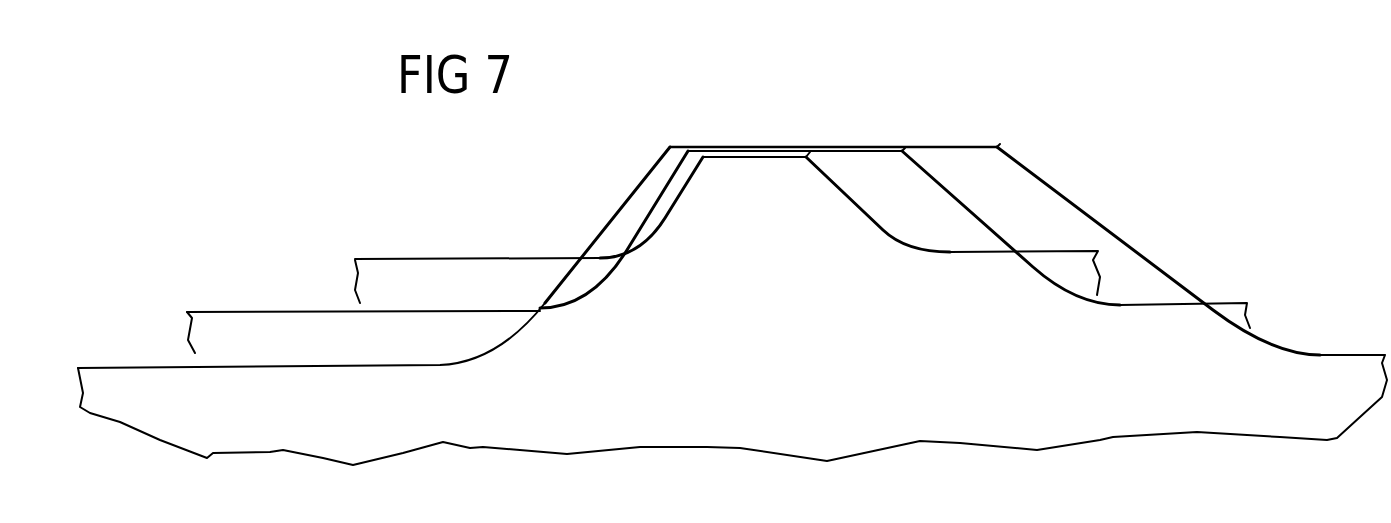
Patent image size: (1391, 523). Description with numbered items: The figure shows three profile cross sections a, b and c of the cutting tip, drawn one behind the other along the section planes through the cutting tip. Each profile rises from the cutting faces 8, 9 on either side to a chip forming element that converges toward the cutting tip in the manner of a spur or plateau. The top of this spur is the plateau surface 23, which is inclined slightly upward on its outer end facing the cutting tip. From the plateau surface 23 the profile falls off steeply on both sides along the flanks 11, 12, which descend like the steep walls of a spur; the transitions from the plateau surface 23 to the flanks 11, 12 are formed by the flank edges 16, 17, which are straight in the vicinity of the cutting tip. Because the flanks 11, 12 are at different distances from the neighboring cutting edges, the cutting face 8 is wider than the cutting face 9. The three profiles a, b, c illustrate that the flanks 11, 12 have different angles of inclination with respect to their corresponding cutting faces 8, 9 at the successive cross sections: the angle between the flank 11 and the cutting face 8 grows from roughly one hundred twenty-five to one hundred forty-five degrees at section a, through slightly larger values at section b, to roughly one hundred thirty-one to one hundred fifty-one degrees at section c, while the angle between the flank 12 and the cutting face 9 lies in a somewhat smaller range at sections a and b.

The cutting face 8 is at (1357, 355).
The cutting face 9 is at (130, 366).
The flank 11 is at (840, 188).
The flank 12 is at (692, 187).
The flank edge 16 is at (812, 146).
The flank edge 17 is at (700, 146).
The plateau surface 23 is at (770, 157).
The profile cross section a is at (900, 244).
The profile cross section b is at (1063, 293).
The profile cross section c is at (1160, 270).